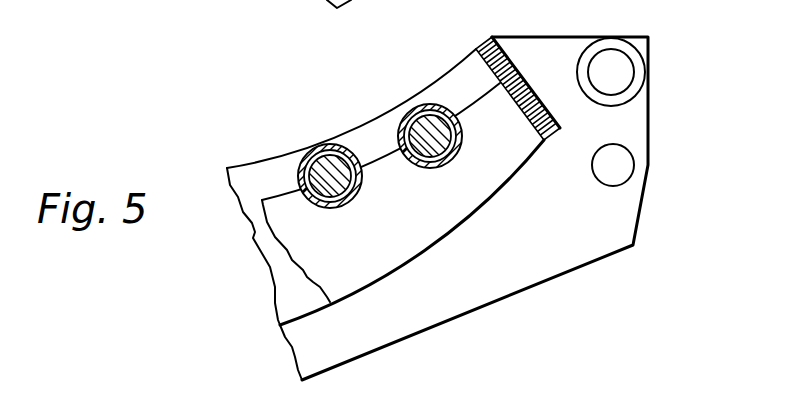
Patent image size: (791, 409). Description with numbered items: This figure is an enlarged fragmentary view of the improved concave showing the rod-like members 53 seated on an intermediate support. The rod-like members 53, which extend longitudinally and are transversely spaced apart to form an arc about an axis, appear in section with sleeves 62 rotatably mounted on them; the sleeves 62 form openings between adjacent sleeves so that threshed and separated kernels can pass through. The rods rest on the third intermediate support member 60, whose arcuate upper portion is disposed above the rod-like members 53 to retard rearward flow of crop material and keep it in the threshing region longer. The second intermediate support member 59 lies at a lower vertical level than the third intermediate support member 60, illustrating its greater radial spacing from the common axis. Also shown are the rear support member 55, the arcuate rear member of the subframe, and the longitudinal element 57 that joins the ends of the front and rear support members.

The rod-like members 53 is at (326, 160).
The rear support member 55 is at (573, 212).
The longitudinal element 57 is at (503, 50).
The second intermediate support member 59 is at (375, 271).
The third intermediate support member 60 is at (292, 150).
The sleeves 62 is at (341, 211).